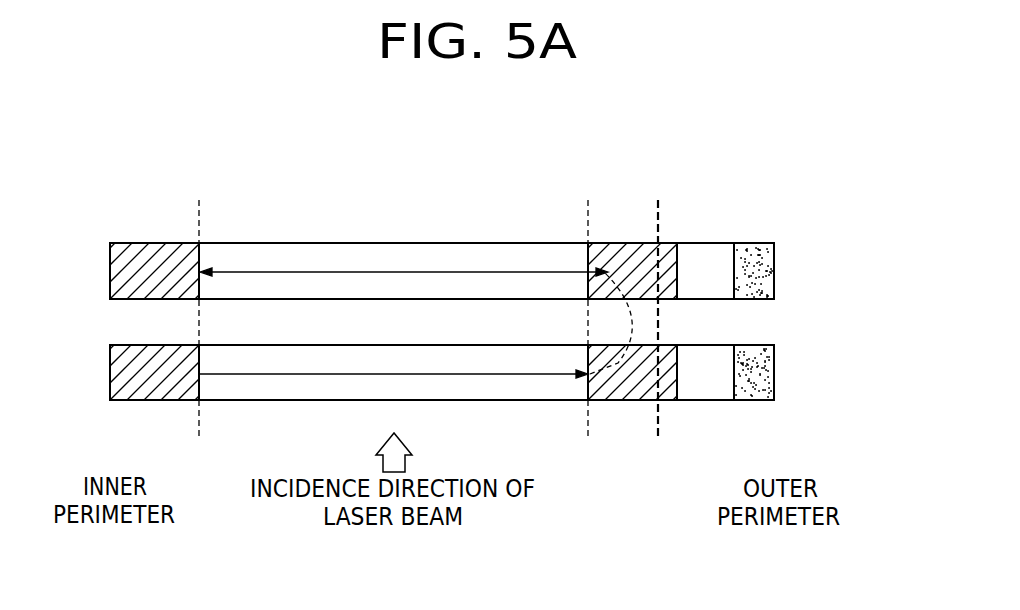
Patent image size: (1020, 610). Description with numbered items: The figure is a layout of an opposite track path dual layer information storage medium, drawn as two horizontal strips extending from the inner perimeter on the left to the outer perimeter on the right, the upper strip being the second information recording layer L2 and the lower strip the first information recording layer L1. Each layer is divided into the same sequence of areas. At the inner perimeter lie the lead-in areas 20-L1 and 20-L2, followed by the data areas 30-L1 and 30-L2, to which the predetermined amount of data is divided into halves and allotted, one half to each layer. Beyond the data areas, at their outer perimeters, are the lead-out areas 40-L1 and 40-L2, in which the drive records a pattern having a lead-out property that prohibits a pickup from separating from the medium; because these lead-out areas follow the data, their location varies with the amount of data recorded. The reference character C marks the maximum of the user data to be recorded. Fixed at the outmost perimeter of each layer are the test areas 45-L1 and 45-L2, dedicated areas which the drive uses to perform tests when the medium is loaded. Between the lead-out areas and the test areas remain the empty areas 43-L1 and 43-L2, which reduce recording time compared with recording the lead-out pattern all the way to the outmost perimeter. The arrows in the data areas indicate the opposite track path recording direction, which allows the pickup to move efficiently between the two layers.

The second information recording layer L2 is at (454, 233).
The first information recording layer L1 is at (480, 412).
The lead-in area 20-L2 is at (143, 255).
The data area 30-L2 is at (308, 255).
The lead-out area 40-L2 is at (623, 258).
The empty area 43-L2 is at (711, 255).
The test area 45-L2 is at (757, 245).
The lead-in area 20-L1 is at (145, 390).
The data area 30-L1 is at (288, 387).
The lead-out area 40-L1 is at (620, 390).
The empty area 43-L1 is at (707, 390).
The test area 45-L1 is at (774, 400).
The maximum of the user data C is at (660, 224).